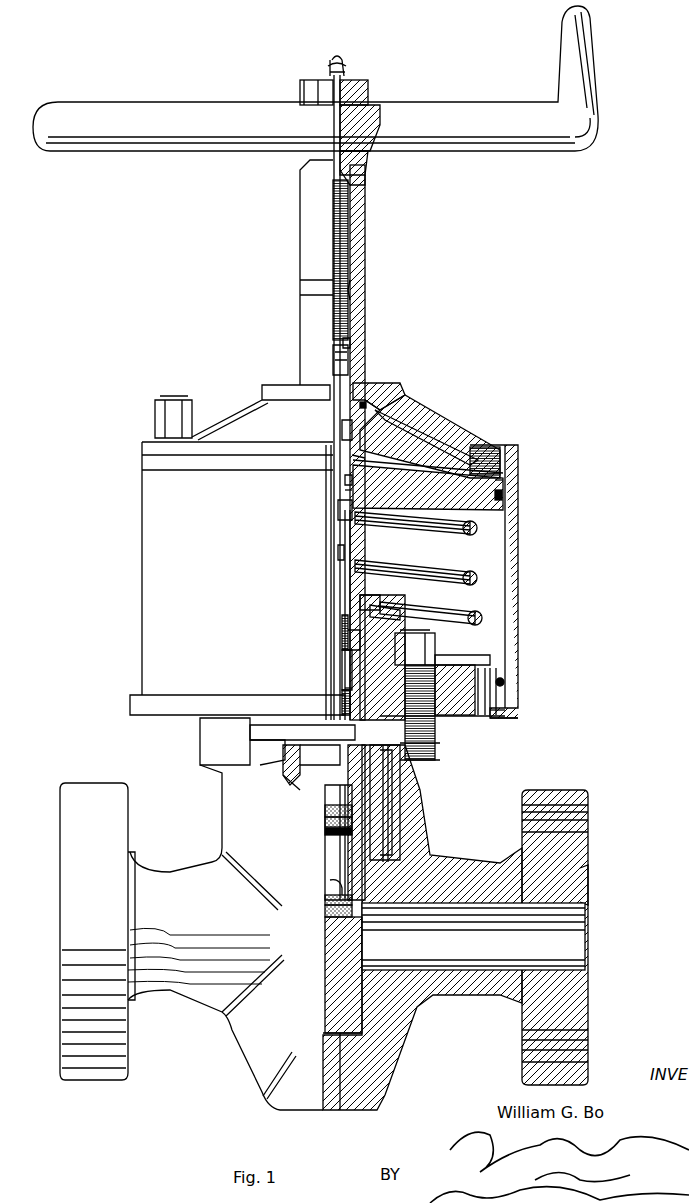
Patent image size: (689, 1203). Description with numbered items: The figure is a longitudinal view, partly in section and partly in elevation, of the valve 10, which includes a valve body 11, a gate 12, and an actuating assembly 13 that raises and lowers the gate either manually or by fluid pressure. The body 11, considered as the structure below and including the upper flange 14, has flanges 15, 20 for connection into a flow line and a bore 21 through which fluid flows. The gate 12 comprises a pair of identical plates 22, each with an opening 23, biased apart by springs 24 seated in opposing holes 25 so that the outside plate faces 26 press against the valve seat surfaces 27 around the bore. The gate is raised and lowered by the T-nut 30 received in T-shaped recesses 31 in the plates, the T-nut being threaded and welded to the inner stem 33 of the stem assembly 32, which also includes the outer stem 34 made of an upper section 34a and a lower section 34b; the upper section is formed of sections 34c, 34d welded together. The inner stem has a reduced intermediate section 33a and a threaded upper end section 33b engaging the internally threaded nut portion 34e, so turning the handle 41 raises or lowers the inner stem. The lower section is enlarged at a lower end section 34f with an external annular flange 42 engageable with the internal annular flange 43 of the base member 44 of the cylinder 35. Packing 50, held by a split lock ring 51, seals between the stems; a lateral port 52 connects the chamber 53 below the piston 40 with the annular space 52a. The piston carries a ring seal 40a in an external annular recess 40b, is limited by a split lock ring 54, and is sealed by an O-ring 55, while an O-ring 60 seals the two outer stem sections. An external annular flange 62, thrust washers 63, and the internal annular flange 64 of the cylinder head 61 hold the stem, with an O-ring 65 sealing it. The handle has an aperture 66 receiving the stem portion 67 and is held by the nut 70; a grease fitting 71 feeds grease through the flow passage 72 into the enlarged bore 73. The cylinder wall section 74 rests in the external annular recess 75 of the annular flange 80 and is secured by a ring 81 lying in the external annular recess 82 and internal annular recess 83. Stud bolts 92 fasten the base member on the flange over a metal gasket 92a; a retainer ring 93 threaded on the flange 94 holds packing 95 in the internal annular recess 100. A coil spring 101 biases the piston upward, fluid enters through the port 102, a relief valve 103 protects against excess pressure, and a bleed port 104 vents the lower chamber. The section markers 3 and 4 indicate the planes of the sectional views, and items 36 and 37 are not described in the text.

The valve 10 is at (104, 463).
The valve body 11 is at (228, 1059).
The gate 12 is at (325, 1033).
The actuating assembly 13 is at (149, 658).
The upper flange 14 is at (198, 733).
The flange 15 is at (68, 1018).
The flange 20 is at (575, 852).
The bore 21 is at (575, 968).
The plates 22 is at (345, 785).
The opening 23 is at (330, 884).
The springs 24 is at (325, 816).
The holes 25 is at (325, 806).
The outside plate faces 26 is at (363, 950).
The valve seat surfaces 27 is at (335, 1018).
The T-nut 30 is at (288, 782).
The T-shaped recesses 31 is at (300, 778).
The stem assembly 32 is at (294, 331).
The inner stem 33 is at (330, 622).
The intermediate section 33a is at (327, 535).
The upper end section 33b is at (334, 213).
The outer stem 34 is at (364, 586).
The upper section 34a is at (372, 278).
The lower section 34b is at (358, 540).
The section 34c is at (366, 200).
The section 34d is at (364, 350).
The nut portion 34e is at (344, 492).
The lower end section 34f is at (358, 690).
The cylinder 35 is at (526, 566).
The stop 36 is at (358, 338).
The packing 37 is at (332, 678).
The piston 40 is at (505, 510).
The ring seal 40a is at (505, 485).
The external annular recess 40b is at (503, 494).
The handle 41 is at (52, 117).
The external annular flange 42 is at (342, 658).
The internal annular flange 43 is at (344, 688).
The base member 44 is at (465, 716).
The packing 50 is at (342, 702).
The split lock ring 51 is at (302, 734).
The lateral port 52 is at (340, 510).
The annular space 52a is at (338, 552).
The chamber 53 is at (495, 583).
The split lock ring 54 is at (367, 458).
The O-ring 55 is at (344, 480).
The O-ring 60 is at (344, 438).
The cylinder head 61 is at (443, 428).
The external annular flange 62 is at (405, 425).
The thrust washers 63 is at (368, 405).
The internal annular flange 64 is at (372, 383).
The O-ring 65 is at (385, 392).
The aperture 66 is at (362, 160).
The portion 67 is at (355, 131).
The nut 70 is at (358, 80).
The grease fitting 71 is at (328, 64).
The flow passage 72 is at (334, 117).
The enlarged bore 73 is at (352, 185).
The cylinder wall section 74 is at (519, 545).
The external annular recess 75 is at (510, 712).
The annular flange 80 is at (512, 718).
The ring 81 is at (505, 668).
The external annular recess 82 is at (492, 668).
The internal annular recess 83 is at (503, 680).
The stud bolts 92 is at (455, 610).
The metal gasket 92a is at (440, 758).
The retainer ring 93 is at (385, 606).
The flange 94 is at (375, 612).
The packing 95 is at (347, 640).
The internal annular recess 100 is at (343, 620).
The coil spring 101 is at (470, 578).
The port 102 is at (495, 448).
The relief valve 103 is at (172, 400).
The bleed port 104 is at (478, 716).
The section line 3 is at (308, 845).
The section line 4 is at (458, 694).